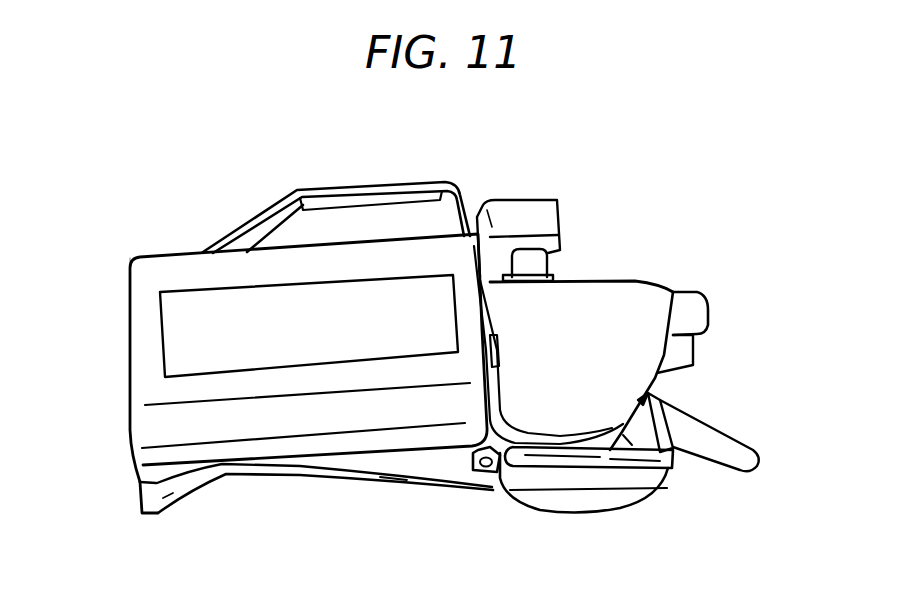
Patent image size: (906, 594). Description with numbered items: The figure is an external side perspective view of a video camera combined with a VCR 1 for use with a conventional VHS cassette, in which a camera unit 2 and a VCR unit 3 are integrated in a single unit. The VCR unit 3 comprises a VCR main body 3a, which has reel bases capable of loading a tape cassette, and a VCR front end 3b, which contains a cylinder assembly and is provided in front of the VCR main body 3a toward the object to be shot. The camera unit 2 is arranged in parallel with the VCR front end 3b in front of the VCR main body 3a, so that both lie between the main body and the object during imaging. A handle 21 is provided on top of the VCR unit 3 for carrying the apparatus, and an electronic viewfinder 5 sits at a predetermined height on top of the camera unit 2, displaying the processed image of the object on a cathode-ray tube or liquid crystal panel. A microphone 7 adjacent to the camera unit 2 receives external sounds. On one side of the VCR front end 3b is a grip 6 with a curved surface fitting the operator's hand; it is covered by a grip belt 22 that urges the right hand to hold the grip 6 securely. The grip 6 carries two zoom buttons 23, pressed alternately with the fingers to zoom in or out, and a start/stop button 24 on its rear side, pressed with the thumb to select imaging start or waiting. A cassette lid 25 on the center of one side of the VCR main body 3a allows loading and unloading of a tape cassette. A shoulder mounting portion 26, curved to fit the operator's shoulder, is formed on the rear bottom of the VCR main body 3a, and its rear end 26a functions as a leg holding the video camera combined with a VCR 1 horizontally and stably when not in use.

The video camera combined with a VCR 1 is at (176, 232).
The camera unit 2 is at (697, 355).
The VCR unit 3 is at (131, 385).
The VCR main body 3a is at (145, 293).
The VCR front end 3b is at (623, 370).
The electronic viewfinder 5 is at (528, 220).
The grip 6 is at (563, 423).
The microphone 7 is at (697, 307).
The handle 21 is at (360, 185).
The grip belt 22 is at (640, 478).
The zoom buttons 23 is at (553, 277).
The start/stop button 24 is at (485, 363).
The cassette lid 25 is at (245, 420).
The shoulder mounting portion 26 is at (210, 478).
The rear end 26a is at (142, 512).